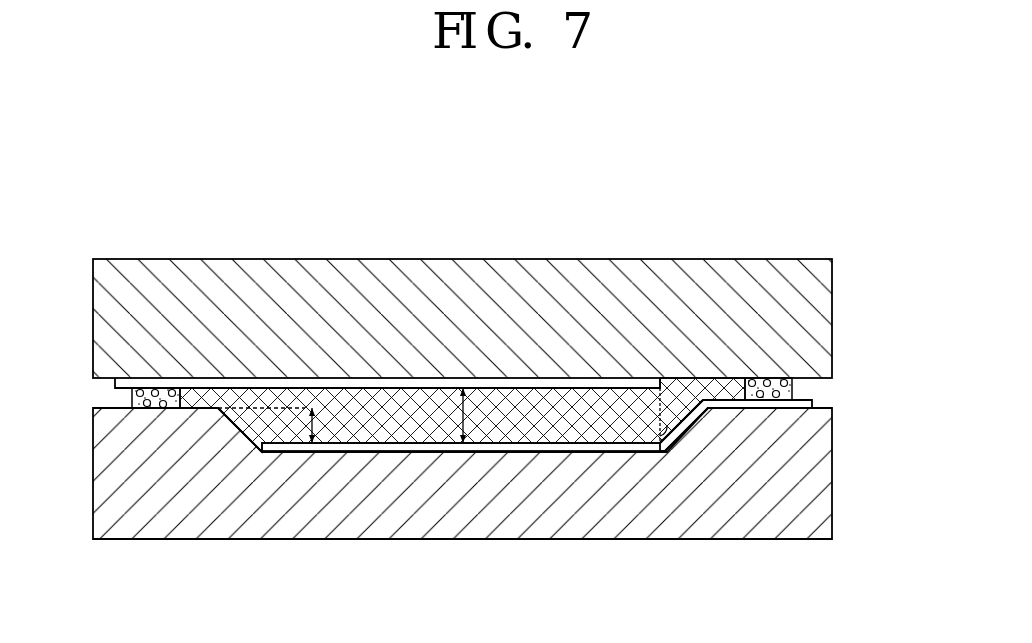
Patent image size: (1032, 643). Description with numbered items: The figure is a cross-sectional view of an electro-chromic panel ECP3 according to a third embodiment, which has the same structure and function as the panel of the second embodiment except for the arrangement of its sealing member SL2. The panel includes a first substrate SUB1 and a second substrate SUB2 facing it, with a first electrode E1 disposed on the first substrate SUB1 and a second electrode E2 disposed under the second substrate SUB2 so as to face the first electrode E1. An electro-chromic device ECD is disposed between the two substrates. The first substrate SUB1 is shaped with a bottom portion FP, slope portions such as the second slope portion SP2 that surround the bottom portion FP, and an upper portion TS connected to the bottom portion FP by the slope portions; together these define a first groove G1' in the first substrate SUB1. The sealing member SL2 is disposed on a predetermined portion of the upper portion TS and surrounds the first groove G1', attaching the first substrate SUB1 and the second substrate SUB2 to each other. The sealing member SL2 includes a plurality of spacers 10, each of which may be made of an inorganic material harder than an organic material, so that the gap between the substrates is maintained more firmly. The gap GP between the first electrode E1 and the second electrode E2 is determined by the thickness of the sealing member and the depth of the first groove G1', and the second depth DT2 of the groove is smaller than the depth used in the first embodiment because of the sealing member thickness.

The electro-chromic panel ECP3 is at (713, 209).
The second substrate SUB2 is at (803, 319).
The first substrate SUB1 is at (815, 473).
The sealing member SL2 is at (133, 397).
The spacer 10 is at (787, 385).
The upper portion TS is at (803, 408).
The second electrode E2 is at (516, 386).
The first electrode E1 is at (515, 452).
The electro-chromic device ECD is at (418, 428).
The second slope portion SP2 is at (234, 434).
The bottom portion FP is at (600, 456).
The first groove G1' is at (618, 311).
The second depth DT2 is at (289, 427).
The gap GP is at (477, 415).